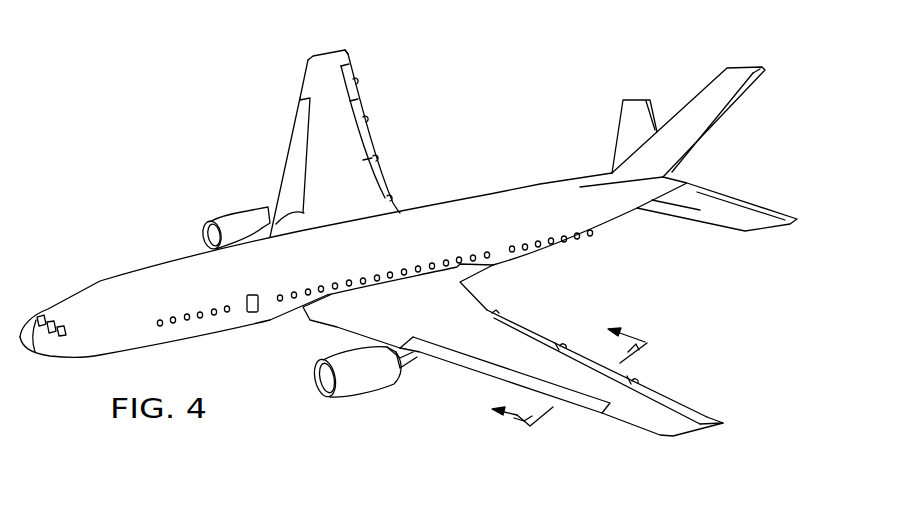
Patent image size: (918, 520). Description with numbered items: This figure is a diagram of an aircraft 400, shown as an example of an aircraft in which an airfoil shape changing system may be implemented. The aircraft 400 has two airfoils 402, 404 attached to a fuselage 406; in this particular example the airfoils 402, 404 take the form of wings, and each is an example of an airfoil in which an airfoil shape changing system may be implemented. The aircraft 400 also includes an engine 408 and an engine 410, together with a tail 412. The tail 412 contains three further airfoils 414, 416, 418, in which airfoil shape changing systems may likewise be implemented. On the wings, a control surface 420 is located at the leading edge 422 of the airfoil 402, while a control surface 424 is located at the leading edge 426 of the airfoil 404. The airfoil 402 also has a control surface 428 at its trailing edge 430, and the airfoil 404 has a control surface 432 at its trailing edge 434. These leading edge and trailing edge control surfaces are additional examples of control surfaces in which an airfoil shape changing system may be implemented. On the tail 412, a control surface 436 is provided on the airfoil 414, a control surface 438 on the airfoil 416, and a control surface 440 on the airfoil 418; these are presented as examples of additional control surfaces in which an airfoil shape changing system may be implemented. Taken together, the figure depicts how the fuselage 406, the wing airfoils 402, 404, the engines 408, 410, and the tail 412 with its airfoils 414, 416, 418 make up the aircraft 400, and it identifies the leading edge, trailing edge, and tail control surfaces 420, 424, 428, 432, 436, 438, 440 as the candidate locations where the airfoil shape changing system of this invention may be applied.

The aircraft 400 is at (137, 124).
The airfoil 402 is at (350, 197).
The airfoil 404 is at (452, 321).
The fuselage 406 is at (98, 288).
The engine 408 is at (230, 210).
The engine 410 is at (370, 397).
The tail 412 is at (712, 177).
The airfoil 414 is at (628, 130).
The airfoil 416 is at (713, 87).
The airfoil 418 is at (727, 215).
The control surface 420 is at (297, 150).
The leading edge 422 is at (303, 82).
The control surface 424 is at (498, 372).
The leading edge 426 is at (330, 330).
The control surface 428 is at (367, 133).
The trailing edge 430 is at (347, 52).
The control surface 432 is at (532, 333).
The trailing edge 434 is at (713, 416).
The control surface 436 is at (655, 117).
The control surface 438 is at (750, 86).
The control surface 440 is at (773, 213).